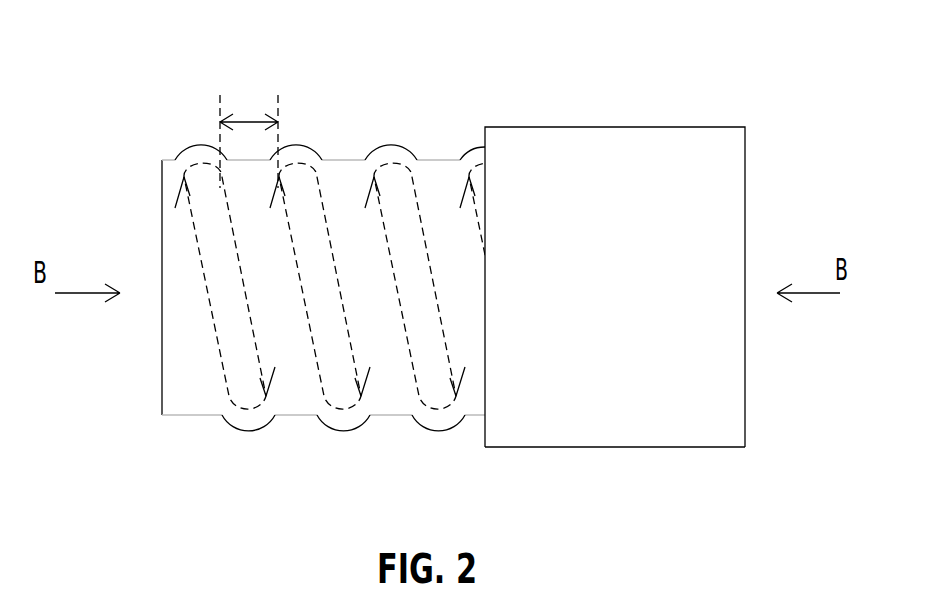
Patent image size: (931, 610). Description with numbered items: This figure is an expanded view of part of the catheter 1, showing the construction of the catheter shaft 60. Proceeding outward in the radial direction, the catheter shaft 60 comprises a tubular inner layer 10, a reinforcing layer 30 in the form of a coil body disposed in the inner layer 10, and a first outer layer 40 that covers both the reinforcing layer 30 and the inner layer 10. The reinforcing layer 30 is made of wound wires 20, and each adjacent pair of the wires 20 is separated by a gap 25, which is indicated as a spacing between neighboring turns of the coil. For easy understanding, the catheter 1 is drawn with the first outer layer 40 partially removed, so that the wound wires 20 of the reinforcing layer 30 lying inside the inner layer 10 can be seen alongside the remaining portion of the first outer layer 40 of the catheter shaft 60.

The catheter 1 is at (507, 73).
The inner layer 10 is at (227, 417).
The wires 20 is at (345, 406).
The gap 25 is at (249, 123).
The reinforcing layer 30 is at (318, 160).
The first outer layer 40 is at (635, 160).
The catheter shaft 60 is at (635, 447).